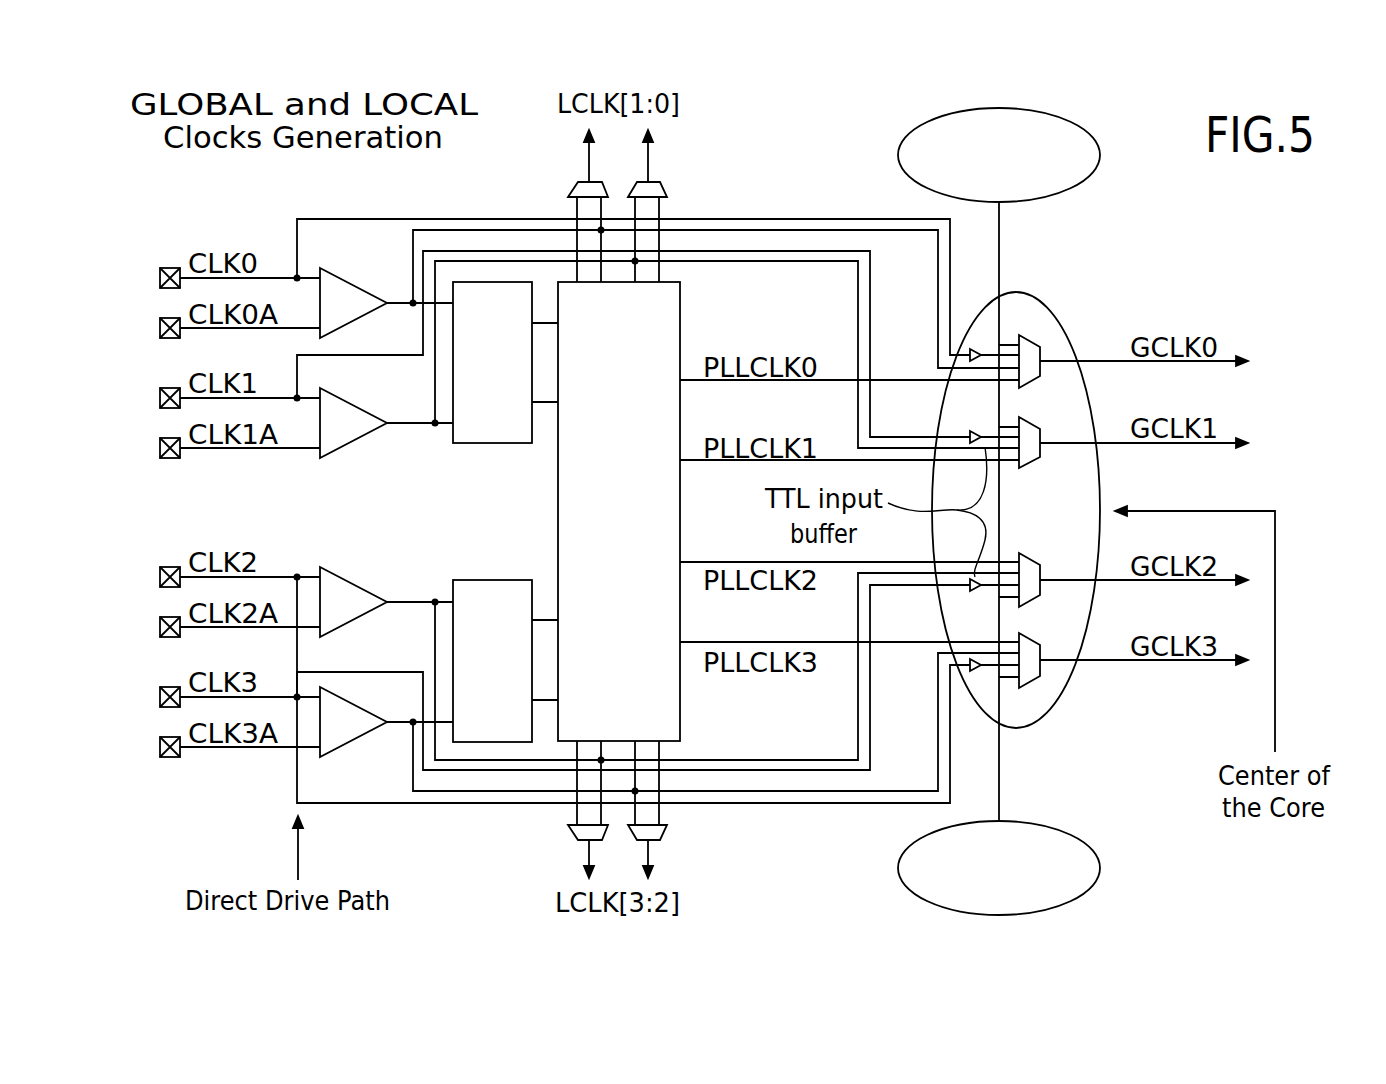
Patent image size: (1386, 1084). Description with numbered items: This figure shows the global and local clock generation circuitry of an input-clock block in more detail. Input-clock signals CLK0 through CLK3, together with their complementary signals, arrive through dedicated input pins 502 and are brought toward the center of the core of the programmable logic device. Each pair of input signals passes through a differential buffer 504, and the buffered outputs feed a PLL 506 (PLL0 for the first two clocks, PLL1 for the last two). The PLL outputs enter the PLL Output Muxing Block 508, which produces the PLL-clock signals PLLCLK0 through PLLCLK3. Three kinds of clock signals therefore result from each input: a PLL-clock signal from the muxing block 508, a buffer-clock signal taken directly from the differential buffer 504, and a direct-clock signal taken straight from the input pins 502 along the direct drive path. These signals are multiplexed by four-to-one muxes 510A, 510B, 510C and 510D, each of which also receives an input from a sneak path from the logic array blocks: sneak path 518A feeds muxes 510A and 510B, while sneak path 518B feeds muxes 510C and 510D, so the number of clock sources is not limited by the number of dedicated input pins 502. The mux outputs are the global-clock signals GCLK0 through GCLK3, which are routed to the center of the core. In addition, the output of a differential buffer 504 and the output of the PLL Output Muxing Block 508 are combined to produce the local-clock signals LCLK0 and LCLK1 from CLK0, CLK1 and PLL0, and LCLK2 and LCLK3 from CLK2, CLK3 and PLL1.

The dedicated input pins 502 is at (157, 282).
The differential buffer 504 is at (374, 283).
The PLL 506 is at (497, 443).
The PLL Output Muxing Block 508 is at (680, 297).
The mux 510A is at (1041, 368).
The mux 510B is at (1041, 449).
The mux 510C is at (1041, 569).
The mux 510D is at (1041, 649).
The sneak path 518A is at (999, 251).
The sneak path 518B is at (999, 778).